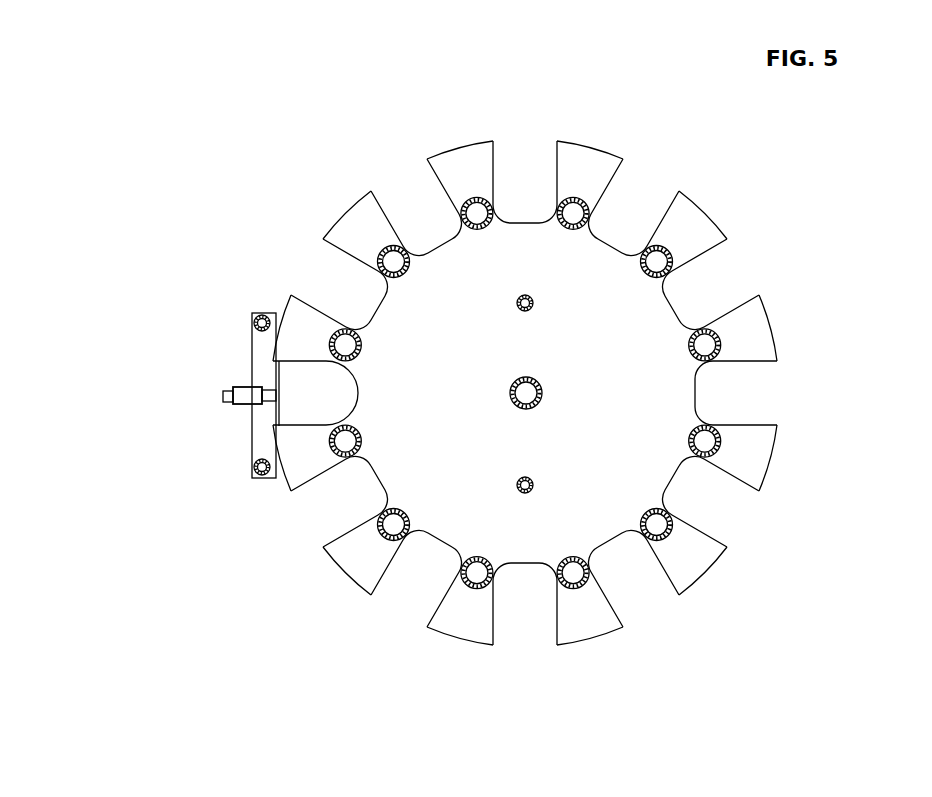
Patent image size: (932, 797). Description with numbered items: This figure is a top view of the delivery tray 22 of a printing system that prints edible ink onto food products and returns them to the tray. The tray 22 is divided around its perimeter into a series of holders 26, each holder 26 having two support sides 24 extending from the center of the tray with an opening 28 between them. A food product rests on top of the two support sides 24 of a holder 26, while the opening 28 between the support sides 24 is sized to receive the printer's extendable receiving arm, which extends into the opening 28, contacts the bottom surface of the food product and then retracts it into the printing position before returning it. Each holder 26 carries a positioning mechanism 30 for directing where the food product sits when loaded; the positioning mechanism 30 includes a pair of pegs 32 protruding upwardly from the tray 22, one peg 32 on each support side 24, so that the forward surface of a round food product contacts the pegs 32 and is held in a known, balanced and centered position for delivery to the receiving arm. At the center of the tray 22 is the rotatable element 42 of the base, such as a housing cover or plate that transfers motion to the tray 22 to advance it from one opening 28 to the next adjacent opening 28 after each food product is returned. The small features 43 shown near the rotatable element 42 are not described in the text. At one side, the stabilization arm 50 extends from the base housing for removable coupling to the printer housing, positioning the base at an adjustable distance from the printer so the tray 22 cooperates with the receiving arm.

The delivery tray 22 is at (266, 236).
The support sides 24 is at (355, 562).
The holder 26 is at (530, 135).
The opening 28 is at (420, 582).
The positioning mechanism 30 is at (729, 430).
The pegs 32 is at (476, 212).
The rotatable element 42 is at (526, 393).
The pin hole 43 is at (533, 308).
The stabilization arm 50 is at (306, 400).